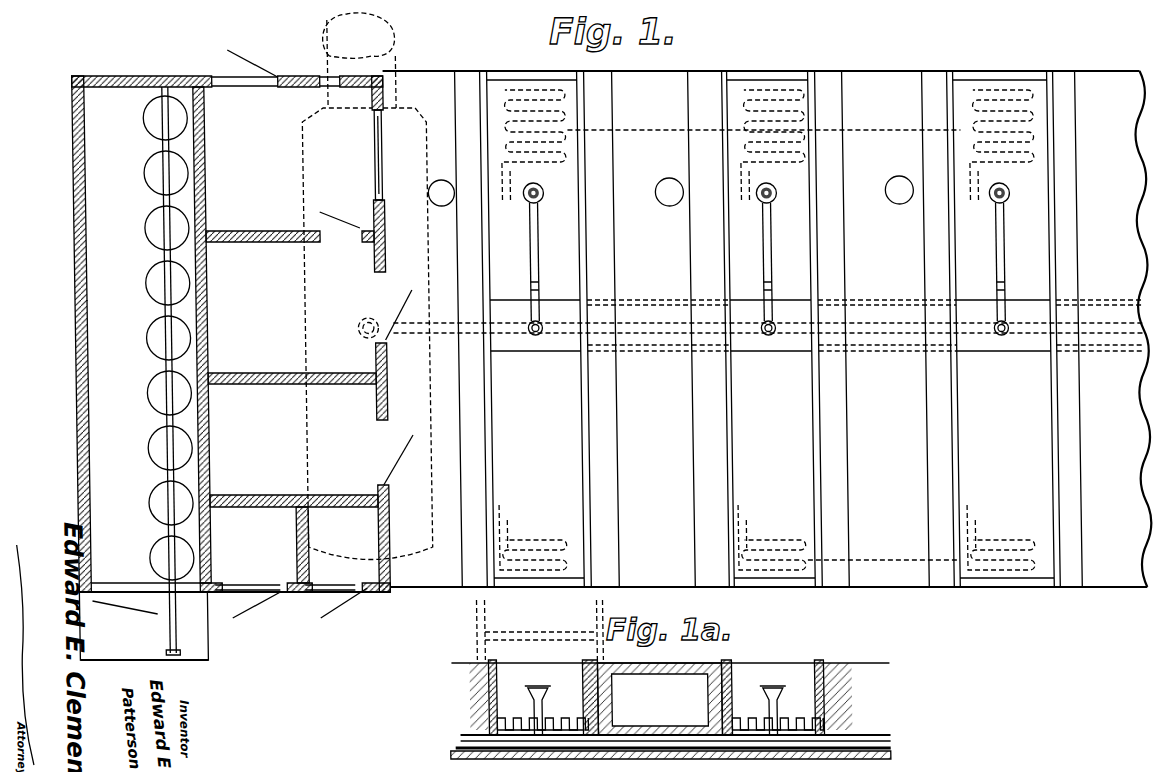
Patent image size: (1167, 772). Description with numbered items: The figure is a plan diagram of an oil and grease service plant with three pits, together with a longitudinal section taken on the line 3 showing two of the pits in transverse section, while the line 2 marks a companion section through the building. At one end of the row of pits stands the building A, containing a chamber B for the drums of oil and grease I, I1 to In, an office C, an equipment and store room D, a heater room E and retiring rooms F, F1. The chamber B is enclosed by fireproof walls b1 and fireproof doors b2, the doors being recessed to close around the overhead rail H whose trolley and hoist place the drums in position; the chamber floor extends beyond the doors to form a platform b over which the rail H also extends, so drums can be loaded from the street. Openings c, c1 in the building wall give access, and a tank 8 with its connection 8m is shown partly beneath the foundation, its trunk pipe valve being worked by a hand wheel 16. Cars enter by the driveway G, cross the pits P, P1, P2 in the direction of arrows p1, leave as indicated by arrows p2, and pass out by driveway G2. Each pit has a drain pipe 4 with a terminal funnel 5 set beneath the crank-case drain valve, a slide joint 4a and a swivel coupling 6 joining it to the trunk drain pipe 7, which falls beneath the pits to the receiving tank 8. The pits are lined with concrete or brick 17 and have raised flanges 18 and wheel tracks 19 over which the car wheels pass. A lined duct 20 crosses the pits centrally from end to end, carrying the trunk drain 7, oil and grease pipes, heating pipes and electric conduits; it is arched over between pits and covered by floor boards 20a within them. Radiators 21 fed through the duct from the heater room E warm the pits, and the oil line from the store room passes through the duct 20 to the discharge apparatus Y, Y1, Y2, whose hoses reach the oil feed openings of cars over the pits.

In FIG. 1, the section line 2 is at (163, 75).
In FIG. 1, the section line 3 is at (505, 343).
In FIG. 1, the drain pipe 4 is at (537, 222).
In FIG. 1A, the drain pipe 4 is at (533, 713).
In FIG. 1, the slide joint 4a is at (537, 252).
In FIG. 1, the terminal funnel 5 is at (540, 187).
In FIG. 1A, the terminal funnel 5 is at (656, 701).
In FIG. 1, the swivel coupling 6 is at (538, 322).
In FIG. 1, the trunk drain pipe 7 is at (389, 345).
In FIG. 1, the receiving tank 8 is at (426, 246).
In FIG. 1, the tank connection 8m is at (359, 60).
In FIG. 1, the hand wheel 16 is at (355, 330).
In FIG. 1, the concrete or brick lining 17 is at (769, 531).
In FIG. 1A, the concrete or brick lining 17 is at (497, 700).
In FIG. 1, the raised flanges 18 is at (491, 510).
In FIG. 1A, the raised flanges 18 is at (497, 660).
In FIG. 1, the wheel tracks 19 is at (704, 515).
In FIG. 1A, the wheel tracks 19 is at (647, 649).
In FIG. 1, the lined duct 20 is at (548, 350).
In FIG. 1A, the floor boards 20a is at (660, 714).
In FIG. 1, the radiators 21 is at (519, 540).
In FIG. 1A, the radiators 21 is at (712, 714).
In FIG. 1, the building A is at (72, 268).
In FIG. 1, the chamber B is at (103, 364).
In FIG. 1, the office C is at (270, 171).
In FIG. 1, the equipment and store room D is at (268, 312).
In FIG. 1, the heater room E is at (268, 448).
In FIG. 1, the retiring room F is at (247, 575).
In FIG. 1, the retiring room F1 is at (335, 568).
In FIG. 1, the driveway G is at (317, 693).
In FIG. 1, the driveway G2 is at (500, 42).
In FIG. 1, the overhead rail H is at (162, 265).
In FIG. 1, the drum I is at (143, 178).
In FIG. 1, the drum I1 is at (143, 122).
In FIG. 1, the drum In is at (149, 552).
In FIG. 1, the pit P is at (536, 329).
In FIG. 1, the pit P1 is at (771, 329).
In FIG. 1, the pit P2 is at (1004, 329).
In FIG. 1, the discharge apparatus Y is at (441, 193).
In FIG. 1, the discharge apparatus Y1 is at (669, 192).
In FIG. 1, the discharge apparatus Y2 is at (899, 190).
In FIG. 1, the platform b is at (143, 626).
In FIG. 1, the fireproof walls b1 is at (72, 354).
In FIG. 1, the fireproof doors b2 is at (202, 637).
In FIG. 1, the door c is at (324, 74).
In FIG. 1, the door c prime c1 is at (262, 76).
In FIG. 1, the arrows p1 is at (777, 593).
In FIG. 1, the arrows p2 is at (776, 65).